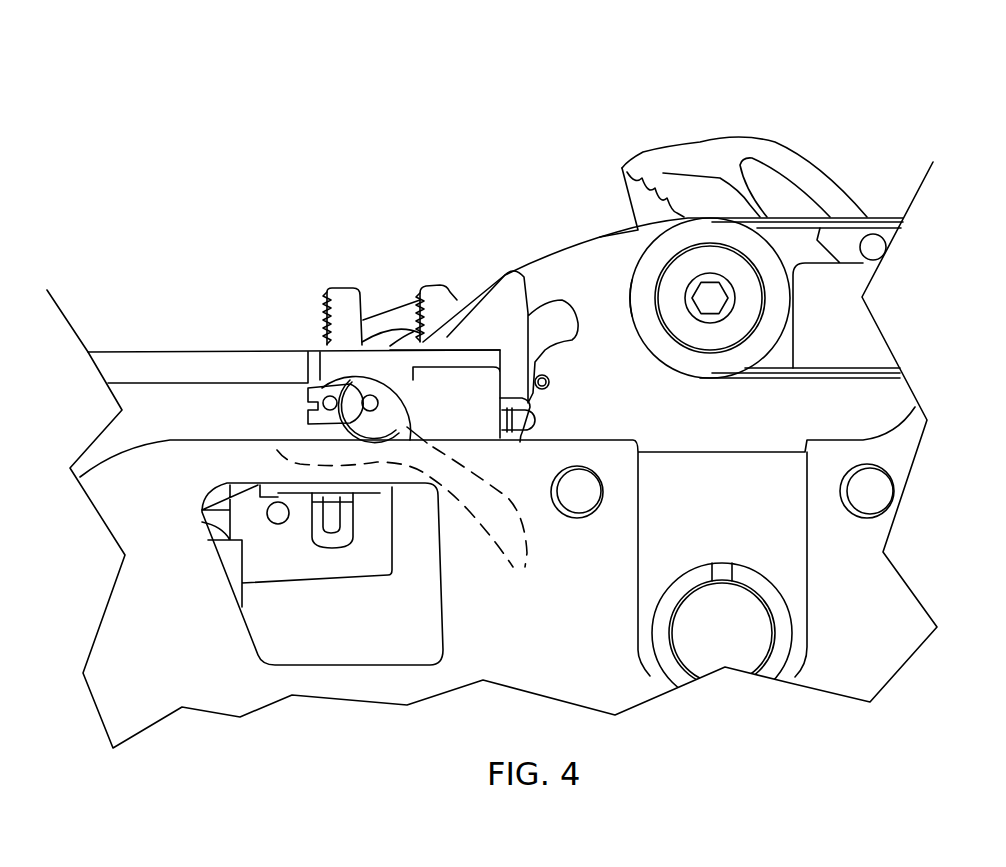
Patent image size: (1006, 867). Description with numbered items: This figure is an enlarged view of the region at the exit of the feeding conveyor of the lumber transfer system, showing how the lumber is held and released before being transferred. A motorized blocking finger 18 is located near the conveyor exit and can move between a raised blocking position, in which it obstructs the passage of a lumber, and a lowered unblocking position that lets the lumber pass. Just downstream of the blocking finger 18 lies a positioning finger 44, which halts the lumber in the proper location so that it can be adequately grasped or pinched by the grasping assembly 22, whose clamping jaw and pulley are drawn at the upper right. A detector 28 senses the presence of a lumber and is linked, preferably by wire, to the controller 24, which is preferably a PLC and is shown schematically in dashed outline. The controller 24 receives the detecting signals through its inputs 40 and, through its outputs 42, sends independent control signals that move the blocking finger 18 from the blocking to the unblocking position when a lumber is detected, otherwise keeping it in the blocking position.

The grasping assembly 22 is at (718, 88).
The blocking fingers 18 is at (335, 288).
The positioning fingers 44 is at (445, 285).
The detector 28 is at (272, 445).
The outputs 42 is at (500, 483).
The inputs 40 is at (277, 452).
The controller 24 is at (510, 606).